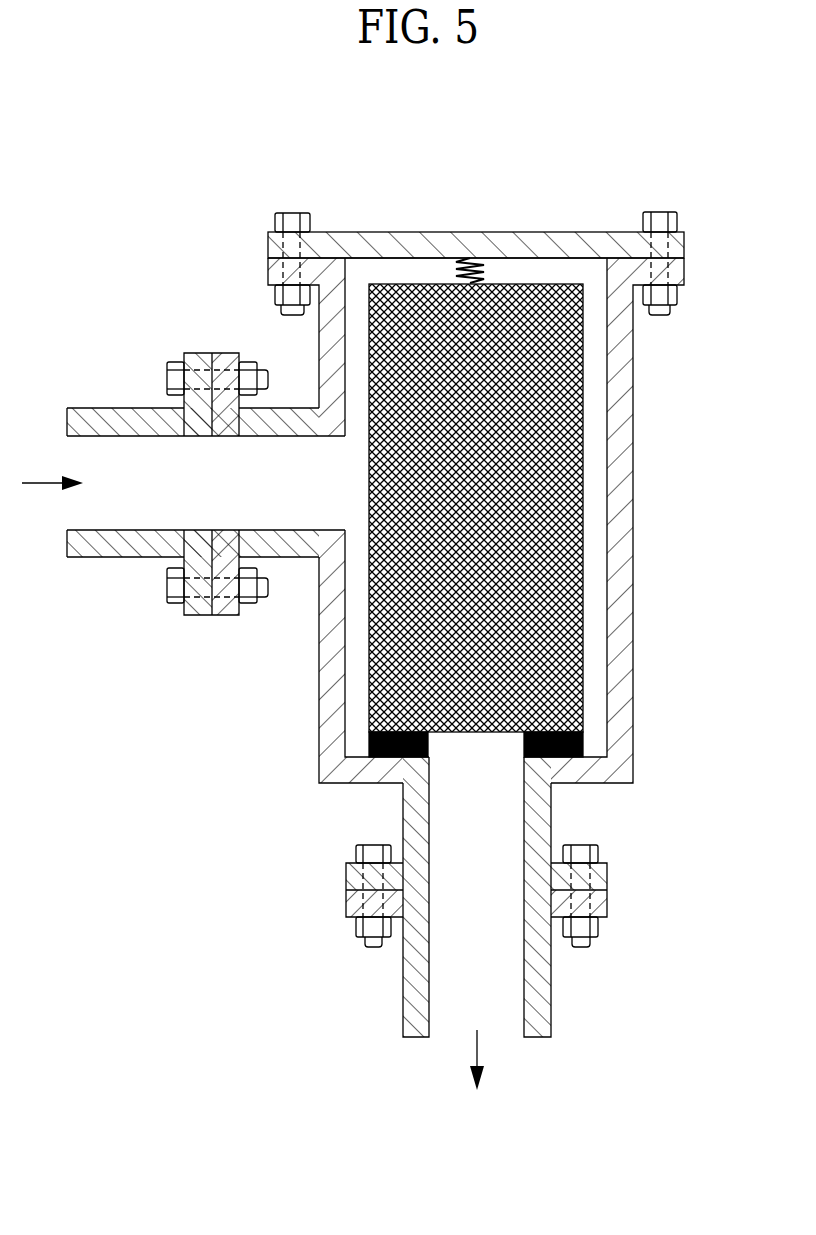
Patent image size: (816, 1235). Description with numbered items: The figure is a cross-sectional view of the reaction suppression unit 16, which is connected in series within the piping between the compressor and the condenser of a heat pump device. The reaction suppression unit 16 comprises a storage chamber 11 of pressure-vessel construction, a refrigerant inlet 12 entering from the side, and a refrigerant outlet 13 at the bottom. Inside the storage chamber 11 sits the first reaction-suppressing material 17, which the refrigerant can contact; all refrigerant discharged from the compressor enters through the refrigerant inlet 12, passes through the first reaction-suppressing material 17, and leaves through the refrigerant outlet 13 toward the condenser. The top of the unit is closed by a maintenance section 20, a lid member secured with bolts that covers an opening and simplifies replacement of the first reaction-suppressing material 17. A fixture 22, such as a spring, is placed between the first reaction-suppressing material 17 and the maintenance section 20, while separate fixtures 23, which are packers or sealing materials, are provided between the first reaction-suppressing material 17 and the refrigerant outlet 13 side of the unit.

The storage chamber 11 is at (590, 393).
The refrigerant inlet 12 is at (287, 463).
The refrigerant outlet 13 is at (497, 820).
The reaction suppression unit 16 is at (670, 176).
The first reaction-suppressing material 17 is at (553, 580).
The maintenance section 20 is at (397, 232).
The fixture 22 is at (493, 268).
The separate fixtures 23 is at (370, 742).